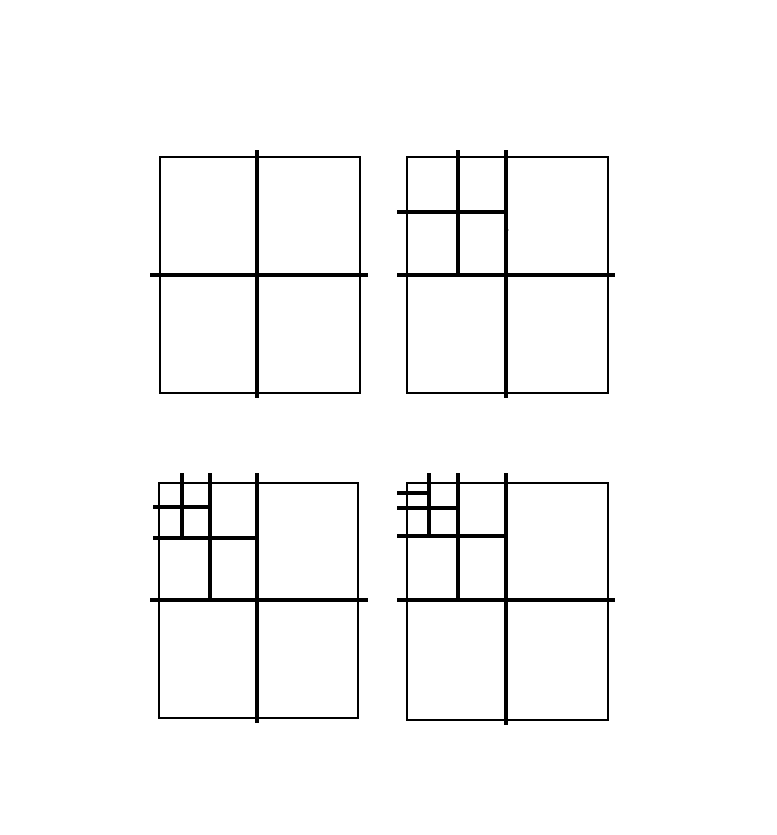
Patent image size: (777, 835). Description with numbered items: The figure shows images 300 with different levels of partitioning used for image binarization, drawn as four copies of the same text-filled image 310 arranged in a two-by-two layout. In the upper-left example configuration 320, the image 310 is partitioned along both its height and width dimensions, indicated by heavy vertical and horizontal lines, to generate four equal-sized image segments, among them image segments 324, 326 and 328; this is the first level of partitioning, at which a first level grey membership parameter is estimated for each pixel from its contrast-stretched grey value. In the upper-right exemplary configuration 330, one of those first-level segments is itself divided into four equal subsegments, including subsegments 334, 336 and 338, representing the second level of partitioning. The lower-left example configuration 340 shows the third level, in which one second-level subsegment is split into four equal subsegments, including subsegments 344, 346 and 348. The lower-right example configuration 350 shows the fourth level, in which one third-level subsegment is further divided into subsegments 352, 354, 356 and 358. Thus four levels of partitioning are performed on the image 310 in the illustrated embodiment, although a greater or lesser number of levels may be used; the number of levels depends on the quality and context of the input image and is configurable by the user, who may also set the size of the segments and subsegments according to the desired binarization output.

The images 300 is at (636, 27).
The image 310 is at (160, 202).
The example configuration 320 is at (276, 94).
The image segment 324 is at (311, 157).
The image segment 326 is at (183, 385).
The image segment 328 is at (300, 383).
The exemplary configuration 330 is at (544, 92).
The subsegment 334 is at (479, 157).
The subsegment 336 is at (431, 228).
The subsegment 338 is at (487, 231).
The example configuration 340 is at (188, 747).
The subsegment 344 is at (199, 482).
The subsegment 346 is at (180, 512).
The subsegment 348 is at (182, 542).
The example configuration 350 is at (592, 747).
The subsegment 352 is at (409, 491).
The subsegment 354 is at (413, 483).
The subsegment 356 is at (397, 493).
The subsegment 358 is at (420, 506).